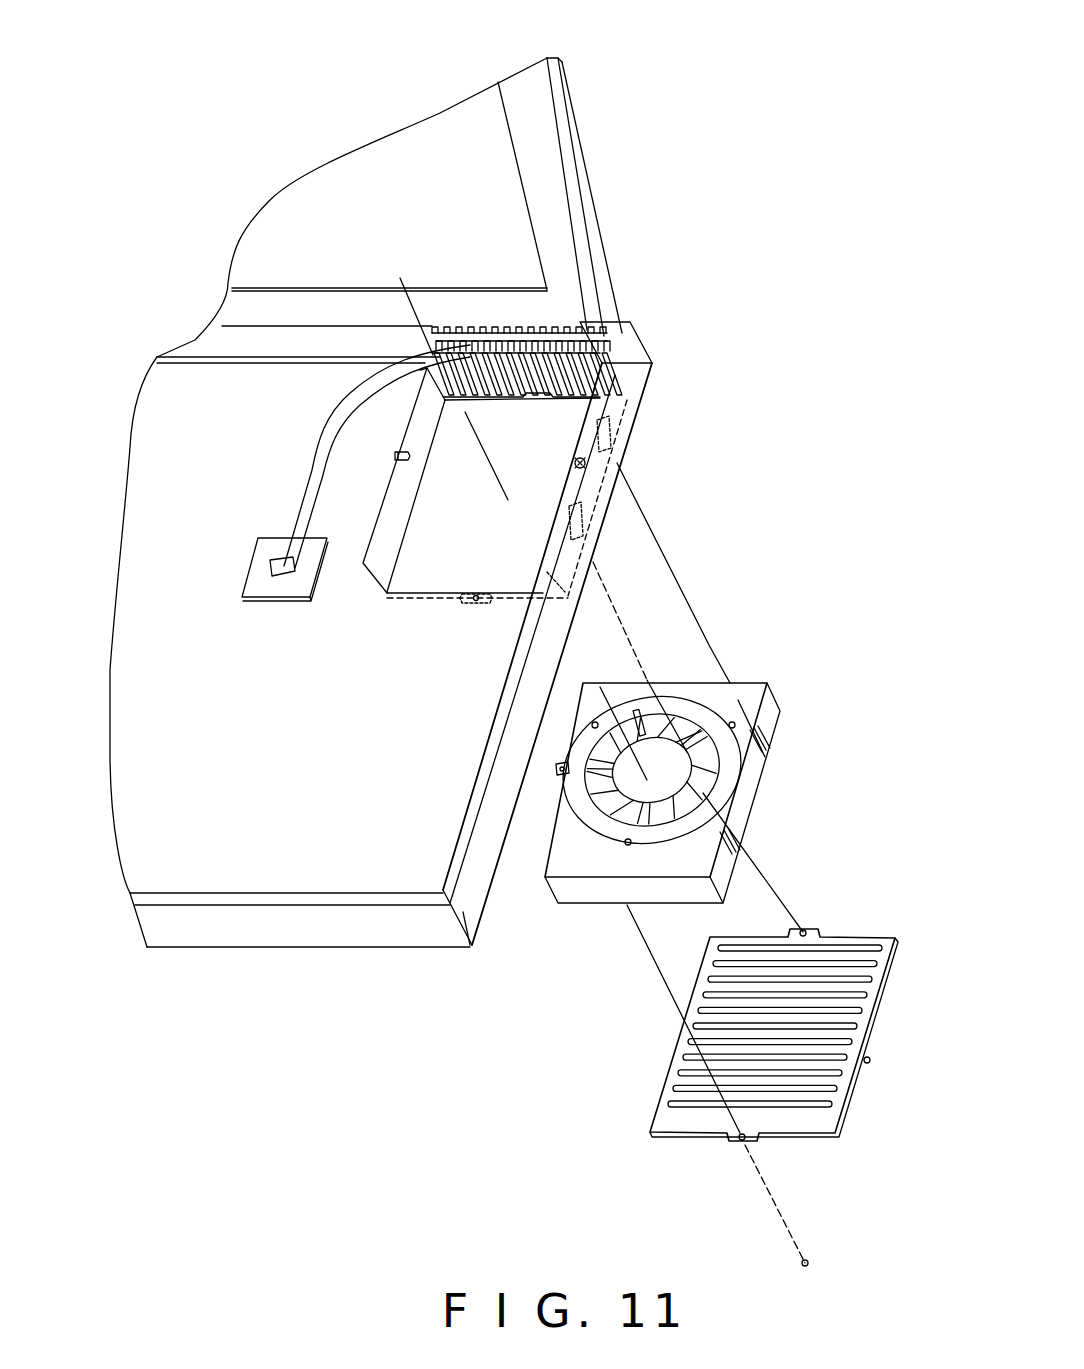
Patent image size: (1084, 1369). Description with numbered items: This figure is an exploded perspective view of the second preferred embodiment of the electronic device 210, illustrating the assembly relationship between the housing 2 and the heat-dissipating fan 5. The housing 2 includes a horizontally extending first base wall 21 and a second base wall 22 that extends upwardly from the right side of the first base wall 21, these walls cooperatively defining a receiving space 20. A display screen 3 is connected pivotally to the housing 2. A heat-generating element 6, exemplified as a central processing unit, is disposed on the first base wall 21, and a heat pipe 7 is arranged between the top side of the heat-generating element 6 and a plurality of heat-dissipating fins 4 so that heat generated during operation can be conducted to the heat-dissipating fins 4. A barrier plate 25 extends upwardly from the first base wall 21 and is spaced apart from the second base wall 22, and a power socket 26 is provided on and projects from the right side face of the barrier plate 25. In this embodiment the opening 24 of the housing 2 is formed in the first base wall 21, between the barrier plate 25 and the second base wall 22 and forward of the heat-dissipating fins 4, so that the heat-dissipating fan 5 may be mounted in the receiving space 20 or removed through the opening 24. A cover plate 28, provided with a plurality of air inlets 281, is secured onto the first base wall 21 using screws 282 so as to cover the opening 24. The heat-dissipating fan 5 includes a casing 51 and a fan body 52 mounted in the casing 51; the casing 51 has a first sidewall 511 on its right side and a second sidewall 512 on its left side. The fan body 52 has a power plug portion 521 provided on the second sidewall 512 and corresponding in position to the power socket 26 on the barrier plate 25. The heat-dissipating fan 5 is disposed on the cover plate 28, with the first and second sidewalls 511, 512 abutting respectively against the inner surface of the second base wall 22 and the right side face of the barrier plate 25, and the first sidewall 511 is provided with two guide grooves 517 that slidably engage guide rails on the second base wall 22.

The electronic device 210 is at (568, 33).
The display screen 3 is at (540, 170).
The heat-dissipating fins 4 is at (525, 327).
The heat pipe 7 is at (310, 480).
The power socket 26 is at (393, 457).
The barrier plate 25 is at (390, 512).
The heat-generating element 6 is at (277, 587).
The receiving space 20 is at (415, 617).
The opening 24 is at (530, 545).
The first base wall 21 is at (307, 848).
The housing 2 is at (402, 957).
The second base wall 22 is at (465, 912).
The power plug portion 521 is at (558, 775).
The second sidewall 512 is at (558, 768).
The casing 51 is at (597, 853).
The heat-dissipating fan 5 is at (590, 905).
The fan body 52 is at (640, 797).
The first sidewall 511 is at (767, 712).
The guide grooves 517 is at (767, 740).
The cover plate 28 is at (873, 937).
The air inlets 281 is at (823, 955).
The screws 282 is at (868, 1063).